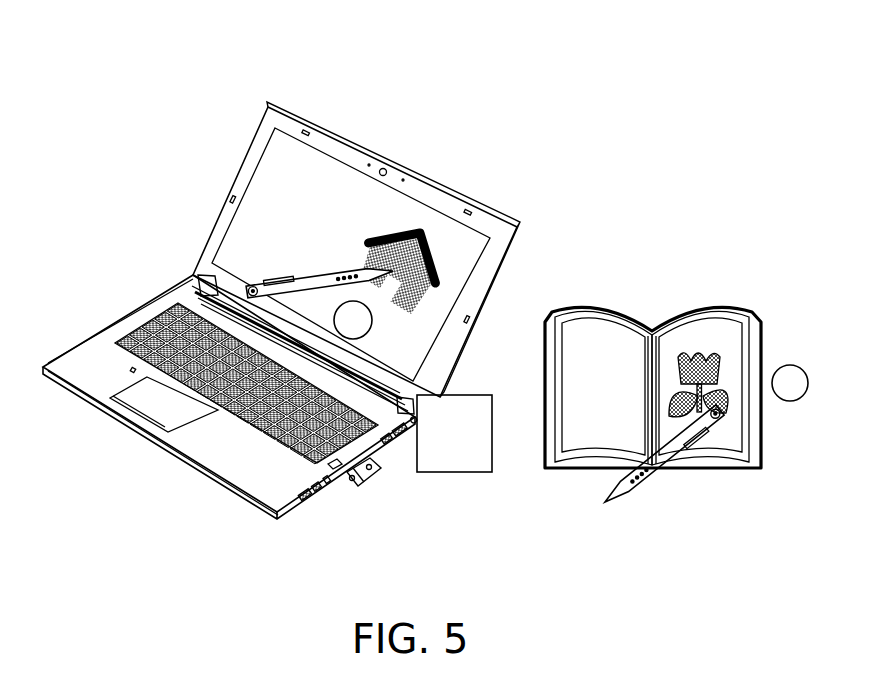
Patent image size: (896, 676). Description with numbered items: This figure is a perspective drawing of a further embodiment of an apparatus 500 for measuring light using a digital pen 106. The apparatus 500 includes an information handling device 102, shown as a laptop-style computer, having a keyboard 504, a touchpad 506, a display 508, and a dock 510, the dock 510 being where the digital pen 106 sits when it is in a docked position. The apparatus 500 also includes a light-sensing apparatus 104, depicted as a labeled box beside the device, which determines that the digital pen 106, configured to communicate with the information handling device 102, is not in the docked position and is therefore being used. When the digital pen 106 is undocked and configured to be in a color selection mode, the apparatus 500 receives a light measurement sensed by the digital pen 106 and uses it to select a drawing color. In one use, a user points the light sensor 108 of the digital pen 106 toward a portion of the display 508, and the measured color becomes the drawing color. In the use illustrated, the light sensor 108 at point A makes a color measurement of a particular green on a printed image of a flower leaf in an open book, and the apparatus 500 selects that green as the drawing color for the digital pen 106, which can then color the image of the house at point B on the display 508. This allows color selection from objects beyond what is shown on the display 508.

The apparatus 500 is at (143, 56).
The information handling device 102 is at (245, 458).
The light-sensing apparatus 104 is at (435, 448).
The digital pen 106 is at (312, 274).
The light sensor 108 is at (248, 290).
The keyboard 504 is at (160, 330).
The touchpad 506 is at (153, 403).
The display 508 is at (307, 210).
The dock 510 is at (378, 477).